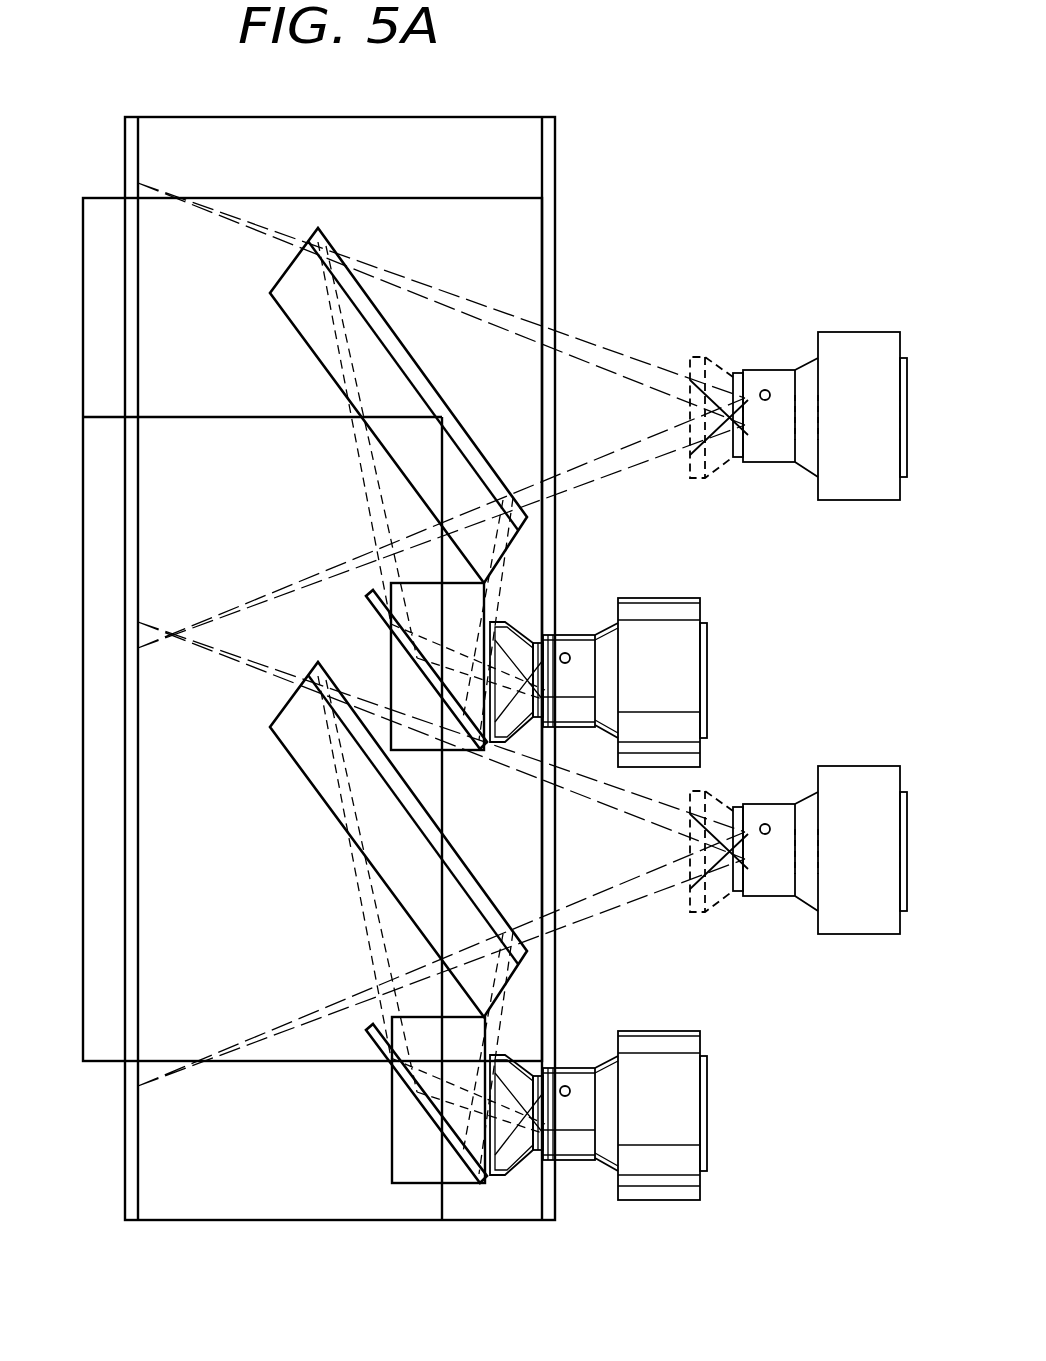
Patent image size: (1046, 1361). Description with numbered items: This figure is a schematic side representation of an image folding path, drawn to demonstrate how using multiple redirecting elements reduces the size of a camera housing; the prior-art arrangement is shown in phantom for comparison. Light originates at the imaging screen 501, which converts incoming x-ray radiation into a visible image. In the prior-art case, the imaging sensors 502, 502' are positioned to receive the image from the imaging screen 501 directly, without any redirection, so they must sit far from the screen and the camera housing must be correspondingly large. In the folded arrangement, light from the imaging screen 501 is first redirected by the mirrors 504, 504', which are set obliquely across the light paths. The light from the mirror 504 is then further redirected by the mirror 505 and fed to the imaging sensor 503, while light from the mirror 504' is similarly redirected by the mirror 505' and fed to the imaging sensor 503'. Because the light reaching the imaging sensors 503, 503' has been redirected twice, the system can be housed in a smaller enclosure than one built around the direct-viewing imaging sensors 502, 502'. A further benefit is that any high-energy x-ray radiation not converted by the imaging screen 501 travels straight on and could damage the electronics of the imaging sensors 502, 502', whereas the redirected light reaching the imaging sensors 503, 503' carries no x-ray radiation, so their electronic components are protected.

The imaging screen 501 is at (125, 1135).
The imaging sensor 502 is at (798, 380).
The imaging sensor 502' is at (798, 887).
The imaging sensor 503 is at (598, 646).
The imaging sensor 503' is at (598, 1151).
The mirror 504 is at (398, 405).
The mirror 504' is at (398, 839).
The mirror 505 is at (388, 669).
The mirror 505' is at (403, 1103).